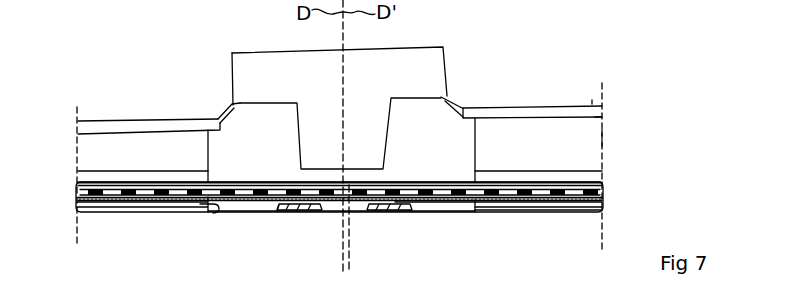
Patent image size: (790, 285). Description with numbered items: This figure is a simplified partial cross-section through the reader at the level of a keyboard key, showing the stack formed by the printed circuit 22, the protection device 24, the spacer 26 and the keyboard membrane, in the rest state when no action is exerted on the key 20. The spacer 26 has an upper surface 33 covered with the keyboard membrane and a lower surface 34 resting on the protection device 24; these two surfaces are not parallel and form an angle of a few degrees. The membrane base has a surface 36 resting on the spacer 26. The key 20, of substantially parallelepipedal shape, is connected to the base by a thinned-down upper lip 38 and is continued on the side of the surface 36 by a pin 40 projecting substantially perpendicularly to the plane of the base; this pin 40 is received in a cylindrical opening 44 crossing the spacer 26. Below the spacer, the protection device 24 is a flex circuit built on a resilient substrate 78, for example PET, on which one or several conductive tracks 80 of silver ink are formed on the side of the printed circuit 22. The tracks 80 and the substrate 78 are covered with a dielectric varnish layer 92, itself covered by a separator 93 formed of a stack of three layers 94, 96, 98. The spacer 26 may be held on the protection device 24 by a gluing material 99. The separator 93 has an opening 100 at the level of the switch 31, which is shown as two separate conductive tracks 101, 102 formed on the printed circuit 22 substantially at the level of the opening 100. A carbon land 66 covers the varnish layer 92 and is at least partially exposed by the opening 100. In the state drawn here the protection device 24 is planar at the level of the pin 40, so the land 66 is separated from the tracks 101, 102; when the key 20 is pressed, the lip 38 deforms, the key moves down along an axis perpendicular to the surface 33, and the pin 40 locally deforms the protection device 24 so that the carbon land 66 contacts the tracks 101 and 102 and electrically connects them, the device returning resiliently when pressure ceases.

The key 20 is at (410, 57).
The printed circuit 22 is at (90, 233).
The protection device 24 is at (592, 100).
The spacer 26 is at (610, 140).
The switch 31 is at (278, 220).
The upper surface 33 is at (595, 118).
The lower surface 34 is at (588, 169).
The surface 36 is at (532, 115).
The thinned-down upper lip 38 is at (455, 103).
The pin 40 is at (313, 132).
The cylindrical opening 44 is at (208, 158).
The carbon land 66 is at (437, 208).
The substrate 78 is at (80, 185).
The conductive track 80 is at (78, 192).
The varnish layer 92 is at (78, 198).
The separator 93 is at (73, 204).
The layer 94 is at (537, 203).
The layer 96 is at (562, 208).
The layer 98 is at (587, 211).
The gluing material 99 is at (597, 177).
The opening 100 is at (218, 213).
The conductive track 101 is at (307, 213).
The conductive track 102 is at (390, 213).